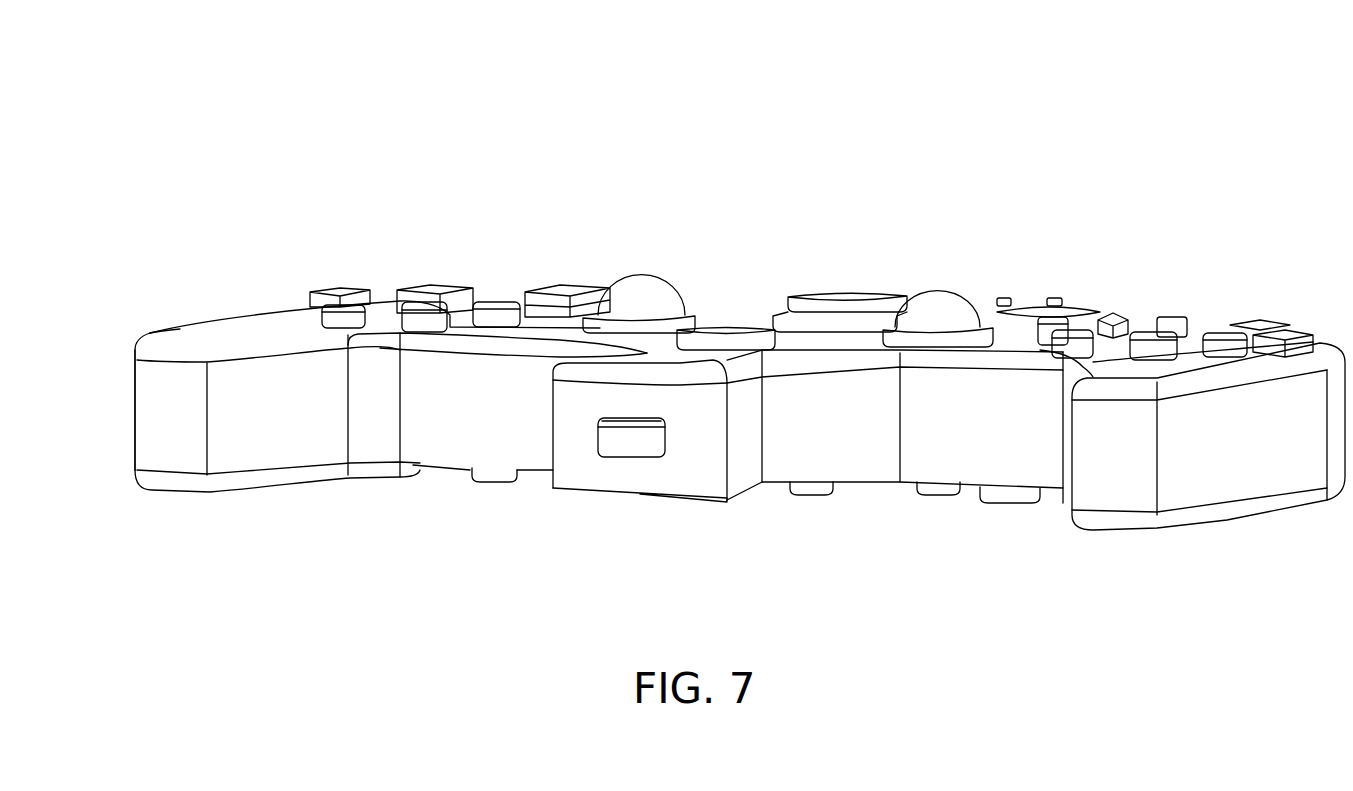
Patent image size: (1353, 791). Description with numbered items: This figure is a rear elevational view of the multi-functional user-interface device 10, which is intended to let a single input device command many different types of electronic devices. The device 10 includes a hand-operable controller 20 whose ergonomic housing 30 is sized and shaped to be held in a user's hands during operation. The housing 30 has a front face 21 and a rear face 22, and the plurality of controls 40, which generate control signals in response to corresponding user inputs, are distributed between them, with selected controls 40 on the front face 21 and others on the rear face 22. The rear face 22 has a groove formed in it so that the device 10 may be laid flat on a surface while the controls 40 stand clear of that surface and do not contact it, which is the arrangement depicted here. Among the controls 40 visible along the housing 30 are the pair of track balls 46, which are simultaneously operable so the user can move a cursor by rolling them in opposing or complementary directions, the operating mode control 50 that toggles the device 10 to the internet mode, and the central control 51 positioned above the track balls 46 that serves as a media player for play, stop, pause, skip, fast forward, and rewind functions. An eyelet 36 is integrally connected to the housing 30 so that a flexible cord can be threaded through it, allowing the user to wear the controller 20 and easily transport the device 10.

The device 10 is at (738, 174).
The hand-operable controller 20 is at (263, 310).
The front face 21 is at (207, 333).
The rear face 22 is at (367, 480).
The ergonomic housing 30 is at (278, 428).
The eyelet 36 is at (625, 442).
The controls 40 is at (478, 239).
The track balls 46 is at (640, 283).
The operating mode control 50 is at (727, 327).
The central control 51 is at (847, 290).